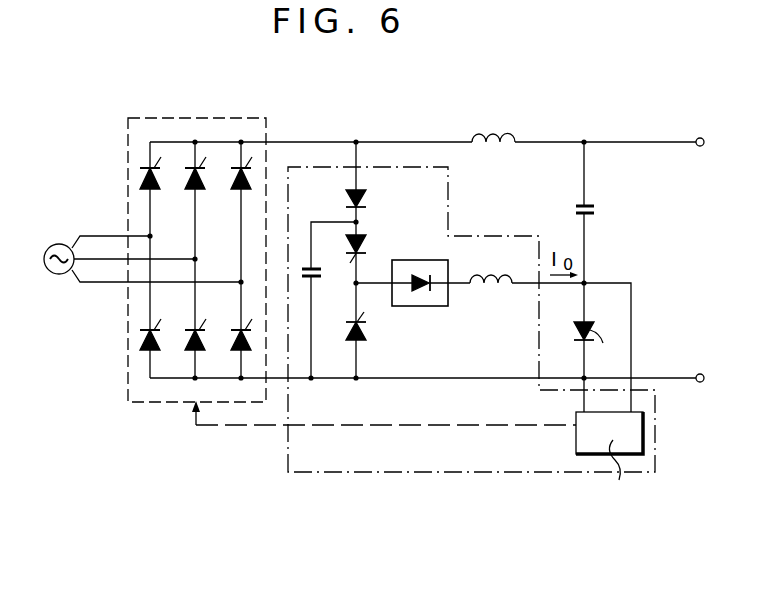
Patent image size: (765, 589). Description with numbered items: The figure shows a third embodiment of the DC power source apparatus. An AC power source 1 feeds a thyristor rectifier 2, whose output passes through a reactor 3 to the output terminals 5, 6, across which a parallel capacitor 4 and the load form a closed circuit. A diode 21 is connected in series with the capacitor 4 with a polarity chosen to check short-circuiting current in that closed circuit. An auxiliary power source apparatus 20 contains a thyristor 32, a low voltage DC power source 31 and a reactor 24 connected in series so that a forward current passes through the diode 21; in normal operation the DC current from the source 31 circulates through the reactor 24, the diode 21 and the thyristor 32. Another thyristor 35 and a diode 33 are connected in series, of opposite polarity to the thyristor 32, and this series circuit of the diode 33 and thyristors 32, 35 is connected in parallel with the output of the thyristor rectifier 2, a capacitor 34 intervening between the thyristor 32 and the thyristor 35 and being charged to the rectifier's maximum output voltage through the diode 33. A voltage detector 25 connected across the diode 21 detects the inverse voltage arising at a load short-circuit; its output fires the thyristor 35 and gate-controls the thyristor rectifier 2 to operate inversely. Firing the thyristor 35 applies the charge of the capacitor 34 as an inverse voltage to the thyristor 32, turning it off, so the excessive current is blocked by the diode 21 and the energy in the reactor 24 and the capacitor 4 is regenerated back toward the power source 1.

The power source 1 is at (57, 275).
The thyristor rectifier 2 is at (128, 157).
The reactor 3 is at (490, 146).
The capacitor 4 is at (598, 208).
The output terminal 5 is at (700, 147).
The output terminal 6 is at (700, 373).
The auxiliary circuit 20 is at (517, 236).
The diode 21 is at (597, 347).
The reactor 24 is at (490, 286).
The voltage detector 25 is at (576, 434).
The low voltage DC power source 31 is at (418, 306).
The thyristor 32 is at (366, 330).
The diode 33 is at (368, 198).
The capacitor 34 is at (323, 273).
The thyristor 35 is at (368, 244).